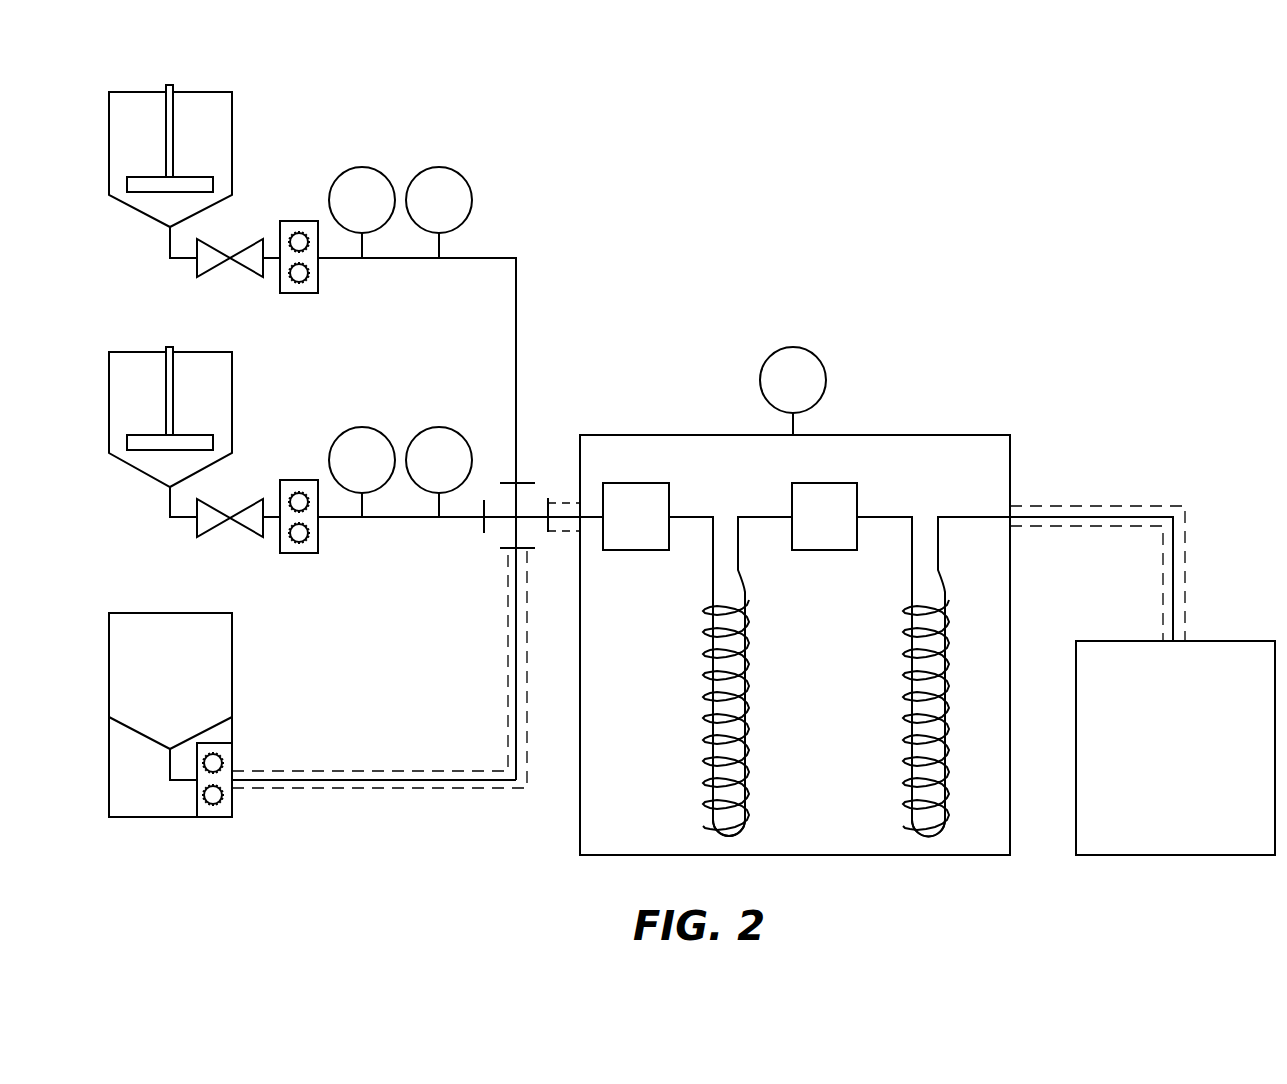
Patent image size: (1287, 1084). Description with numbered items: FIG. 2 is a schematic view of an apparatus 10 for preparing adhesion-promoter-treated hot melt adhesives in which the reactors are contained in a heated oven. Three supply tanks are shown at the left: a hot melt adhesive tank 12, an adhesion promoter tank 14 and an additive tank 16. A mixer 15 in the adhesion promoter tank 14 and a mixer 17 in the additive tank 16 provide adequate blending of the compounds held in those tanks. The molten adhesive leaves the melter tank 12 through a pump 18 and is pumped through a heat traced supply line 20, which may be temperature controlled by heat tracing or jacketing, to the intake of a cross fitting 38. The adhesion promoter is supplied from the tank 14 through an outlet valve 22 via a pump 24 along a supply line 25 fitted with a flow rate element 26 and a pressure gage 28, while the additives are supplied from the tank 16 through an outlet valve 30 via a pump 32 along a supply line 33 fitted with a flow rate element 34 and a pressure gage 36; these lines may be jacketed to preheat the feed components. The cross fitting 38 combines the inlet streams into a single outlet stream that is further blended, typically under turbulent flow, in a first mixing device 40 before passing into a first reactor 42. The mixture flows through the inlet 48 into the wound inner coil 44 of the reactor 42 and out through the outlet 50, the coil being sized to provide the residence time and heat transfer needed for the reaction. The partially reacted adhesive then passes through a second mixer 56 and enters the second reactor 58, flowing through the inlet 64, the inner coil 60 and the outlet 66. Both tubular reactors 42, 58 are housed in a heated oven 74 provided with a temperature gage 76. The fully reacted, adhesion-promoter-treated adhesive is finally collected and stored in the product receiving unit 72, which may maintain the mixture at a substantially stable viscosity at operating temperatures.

The processing system 10 is at (958, 122).
The hot melt adhesive tank 12 is at (228, 665).
The adhesion promoter tank 14 is at (232, 400).
The mixer 15 is at (205, 450).
The additive tank 16 is at (232, 140).
The mixer 17 is at (205, 190).
The pump 18 is at (228, 752).
The supply line 20 is at (345, 782).
The outlet valve 22 is at (245, 528).
The pump 24 is at (286, 553).
The supply line 25 is at (343, 521).
The flow rate element 26 is at (363, 427).
The pressure gage 28 is at (440, 427).
The outlet valve 30 is at (245, 268).
The pump 32 is at (286, 293).
The supply line 33 is at (343, 261).
The flow rate element 34 is at (363, 167).
The pressure gage 36 is at (440, 167).
The cross fitting 38 is at (488, 548).
The first mixing device 40 is at (637, 483).
The first reactor 42 is at (670, 697).
The inner coil 44 is at (745, 834).
The inlet 48 is at (703, 515).
The outlet 50 is at (775, 516).
The second mixer 56 is at (825, 483).
The second reactor 58 is at (880, 697).
The inner coil 60 is at (945, 834).
The inlet 64 is at (890, 515).
The outlet 66 is at (975, 516).
The product receiving unit 72 is at (1210, 641).
The heated oven 74 is at (940, 435).
The temperature gage 76 is at (795, 347).